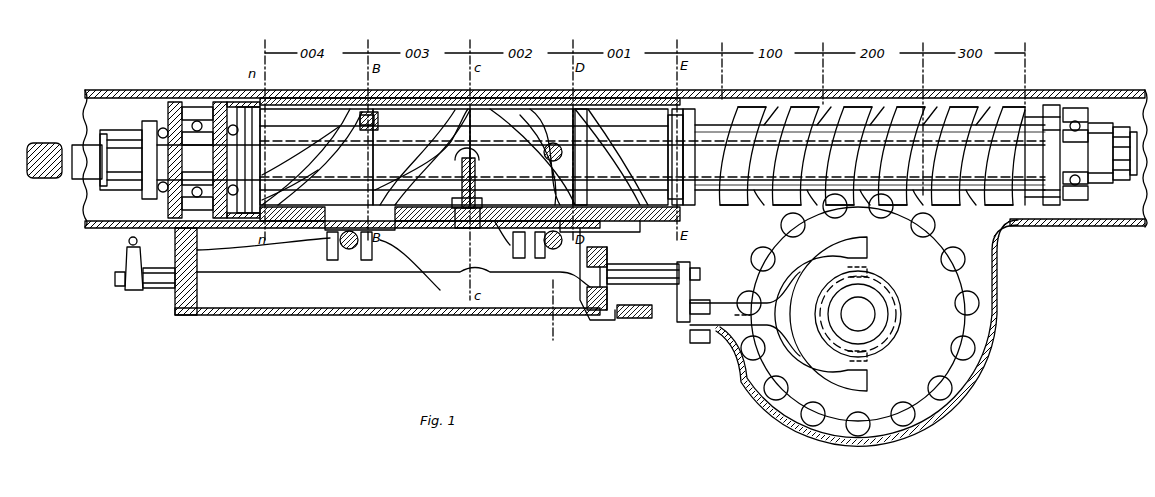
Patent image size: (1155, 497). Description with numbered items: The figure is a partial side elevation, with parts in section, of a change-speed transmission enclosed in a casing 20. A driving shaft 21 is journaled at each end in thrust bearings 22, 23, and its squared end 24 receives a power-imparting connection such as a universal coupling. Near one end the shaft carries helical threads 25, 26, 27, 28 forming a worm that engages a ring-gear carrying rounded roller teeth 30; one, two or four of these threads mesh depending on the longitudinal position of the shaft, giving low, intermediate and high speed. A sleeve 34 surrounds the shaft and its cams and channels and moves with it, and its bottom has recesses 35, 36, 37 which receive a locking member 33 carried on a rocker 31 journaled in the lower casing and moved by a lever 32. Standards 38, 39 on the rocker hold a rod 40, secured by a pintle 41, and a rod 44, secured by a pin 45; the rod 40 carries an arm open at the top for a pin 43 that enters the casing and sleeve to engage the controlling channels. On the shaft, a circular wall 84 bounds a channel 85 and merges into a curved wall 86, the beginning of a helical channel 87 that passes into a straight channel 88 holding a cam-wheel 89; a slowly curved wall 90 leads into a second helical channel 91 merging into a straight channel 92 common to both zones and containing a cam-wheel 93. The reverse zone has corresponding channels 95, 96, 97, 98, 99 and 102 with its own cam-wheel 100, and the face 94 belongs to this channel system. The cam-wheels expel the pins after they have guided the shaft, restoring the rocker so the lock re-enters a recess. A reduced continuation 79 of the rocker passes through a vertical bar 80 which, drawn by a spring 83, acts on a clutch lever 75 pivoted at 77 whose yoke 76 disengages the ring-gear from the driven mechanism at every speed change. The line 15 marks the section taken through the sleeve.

The section line 15 is at (562, 55).
The casing 20 is at (132, 92).
The driving shaft 21 is at (893, 140).
The thrust bearing 22 is at (1088, 122).
The thrust bearing 23 is at (226, 104).
The squared end 24 is at (40, 145).
The helical thread 25 is at (862, 107).
The helical thread 26 is at (1022, 198).
The helical thread 27 is at (765, 107).
The helical thread 28 is at (950, 198).
The roller teeth 30 is at (967, 258).
The rocker 31 is at (277, 264).
The lever 32 is at (127, 250).
The locking member 33 is at (467, 223).
The sleeve 34 is at (642, 99).
The recess 35 is at (603, 230).
The recess 36 is at (497, 235).
The recess 37 is at (395, 230).
The standards 38 is at (527, 247).
The standards 39 is at (348, 251).
The rod 40 is at (547, 249).
The pintle 41 is at (520, 241).
The pin 43 is at (605, 330).
The rod 44 is at (327, 253).
The pin 45 is at (375, 240).
The lever 75 is at (733, 345).
The yoke 76 is at (806, 266).
The pivot 77 is at (692, 343).
The reduced continuation 79 is at (648, 270).
The vertical bar 80 is at (688, 268).
The spring 83 is at (648, 320).
The circular wall 84 is at (690, 207).
The channel 85 is at (702, 165).
The curved wall 86 is at (690, 120).
The helical channel 87 is at (622, 330).
The straight channel 88 is at (585, 118).
The cam-wheel 89 is at (583, 120).
The wall 90 is at (604, 312).
The helical channel 91 is at (540, 135).
The straight channel 92 is at (523, 100).
The cam-wheel 93 is at (462, 226).
The worm flight 94 is at (285, 203).
The channel 95 is at (290, 205).
The channel 96 is at (290, 130).
The channel 97 is at (395, 122).
The channel part 98 is at (362, 117).
The channel 99 is at (414, 270).
The cam-wheel 100 is at (366, 113).
The channel 102 is at (462, 100).